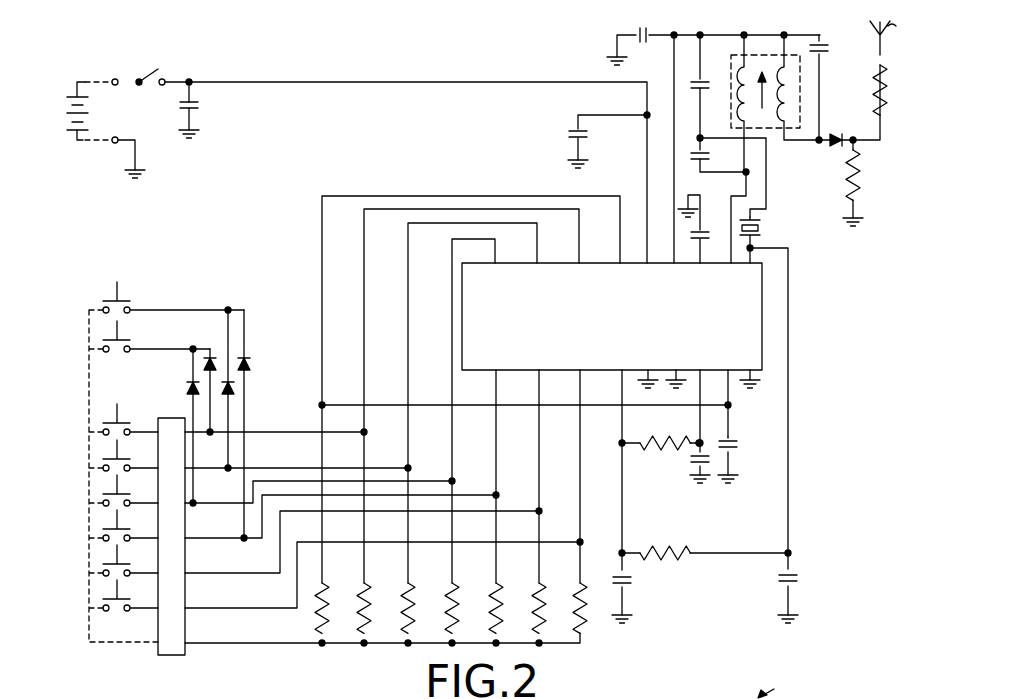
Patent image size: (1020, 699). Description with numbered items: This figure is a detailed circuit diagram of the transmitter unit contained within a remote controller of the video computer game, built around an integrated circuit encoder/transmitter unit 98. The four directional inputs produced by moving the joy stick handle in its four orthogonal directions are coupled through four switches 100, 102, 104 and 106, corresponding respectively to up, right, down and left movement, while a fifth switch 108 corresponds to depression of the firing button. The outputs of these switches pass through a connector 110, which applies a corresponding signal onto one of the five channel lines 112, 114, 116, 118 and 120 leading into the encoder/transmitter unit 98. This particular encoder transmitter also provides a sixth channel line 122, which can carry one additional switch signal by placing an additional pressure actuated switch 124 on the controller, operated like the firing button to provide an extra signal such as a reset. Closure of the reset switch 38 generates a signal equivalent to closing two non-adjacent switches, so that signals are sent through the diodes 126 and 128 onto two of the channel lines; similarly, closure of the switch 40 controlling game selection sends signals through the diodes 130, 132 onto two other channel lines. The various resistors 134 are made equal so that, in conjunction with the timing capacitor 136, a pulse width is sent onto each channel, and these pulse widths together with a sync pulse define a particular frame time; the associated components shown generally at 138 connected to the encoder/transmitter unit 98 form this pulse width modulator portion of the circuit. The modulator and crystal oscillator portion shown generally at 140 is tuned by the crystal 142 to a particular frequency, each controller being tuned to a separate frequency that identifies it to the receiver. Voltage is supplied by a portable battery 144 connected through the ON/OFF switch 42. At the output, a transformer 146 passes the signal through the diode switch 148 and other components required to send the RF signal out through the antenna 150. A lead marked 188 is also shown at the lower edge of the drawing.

The portable battery 144 is at (62, 95).
The ON/OFF switch 42 is at (152, 73).
The modulator and crystal oscillator portion 140 is at (643, 14).
The transformer 146 is at (800, 81).
The diode switch 148 is at (834, 132).
The antenna 150 is at (896, 68).
The crystal 142 is at (762, 229).
The encoder/transmitter unit 98 is at (762, 295).
The reset switch 38 is at (115, 297).
The game selection switch 40 is at (115, 338).
The up switch 100 is at (115, 410).
The right switch 102 is at (115, 448).
The down switch 104 is at (115, 483).
The left switch 106 is at (115, 518).
The firing button switch 108 is at (115, 553).
The additional pressure actuated switch 124 is at (115, 587).
The diode 126 is at (251, 365).
The diode 128 is at (236, 388).
The diode 130 is at (203, 364).
The diode 132 is at (186, 388).
The connector 110 is at (166, 657).
The channel line 112 is at (364, 368).
The channel line 114 is at (408, 375).
The channel line 116 is at (460, 390).
The channel line 118 is at (496, 385).
The channel line 120 is at (539, 385).
The sixth channel line 122 is at (580, 470).
The resistors 134 is at (332, 656).
The timing capacitor 136 is at (736, 446).
The pulse width modulator components 138 is at (659, 488).
The connection 188 is at (786, 689).